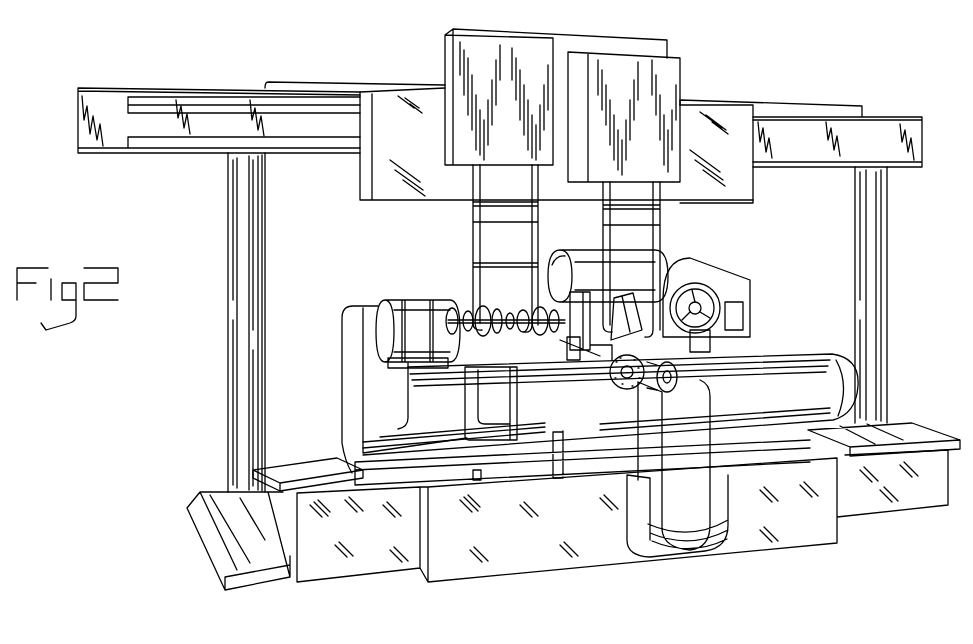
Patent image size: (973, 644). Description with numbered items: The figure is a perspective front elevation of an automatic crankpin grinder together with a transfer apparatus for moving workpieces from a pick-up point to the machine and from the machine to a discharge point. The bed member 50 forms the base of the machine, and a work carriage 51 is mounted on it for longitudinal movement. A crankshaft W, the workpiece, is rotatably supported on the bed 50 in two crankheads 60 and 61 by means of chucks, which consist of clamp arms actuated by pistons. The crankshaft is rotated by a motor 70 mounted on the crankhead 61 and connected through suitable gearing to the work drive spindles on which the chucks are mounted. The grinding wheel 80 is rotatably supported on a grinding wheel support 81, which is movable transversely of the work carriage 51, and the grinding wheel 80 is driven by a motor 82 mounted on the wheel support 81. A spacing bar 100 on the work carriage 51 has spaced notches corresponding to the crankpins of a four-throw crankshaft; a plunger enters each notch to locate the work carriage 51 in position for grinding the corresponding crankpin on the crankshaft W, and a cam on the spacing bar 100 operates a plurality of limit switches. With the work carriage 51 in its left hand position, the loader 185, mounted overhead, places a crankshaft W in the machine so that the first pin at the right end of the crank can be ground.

The loader 185 is at (805, 130).
The motor 82 is at (576, 252).
The motor 70 is at (386, 299).
The crankhead 61 is at (463, 372).
The grinding wheel support 81 is at (735, 343).
The crankhead 60 is at (788, 346).
The work carriage 51 is at (877, 443).
The grinding wheel 80 is at (640, 392).
The crankshaft W is at (668, 397).
The spacing bar 100 is at (752, 457).
The bed member 50 is at (898, 503).